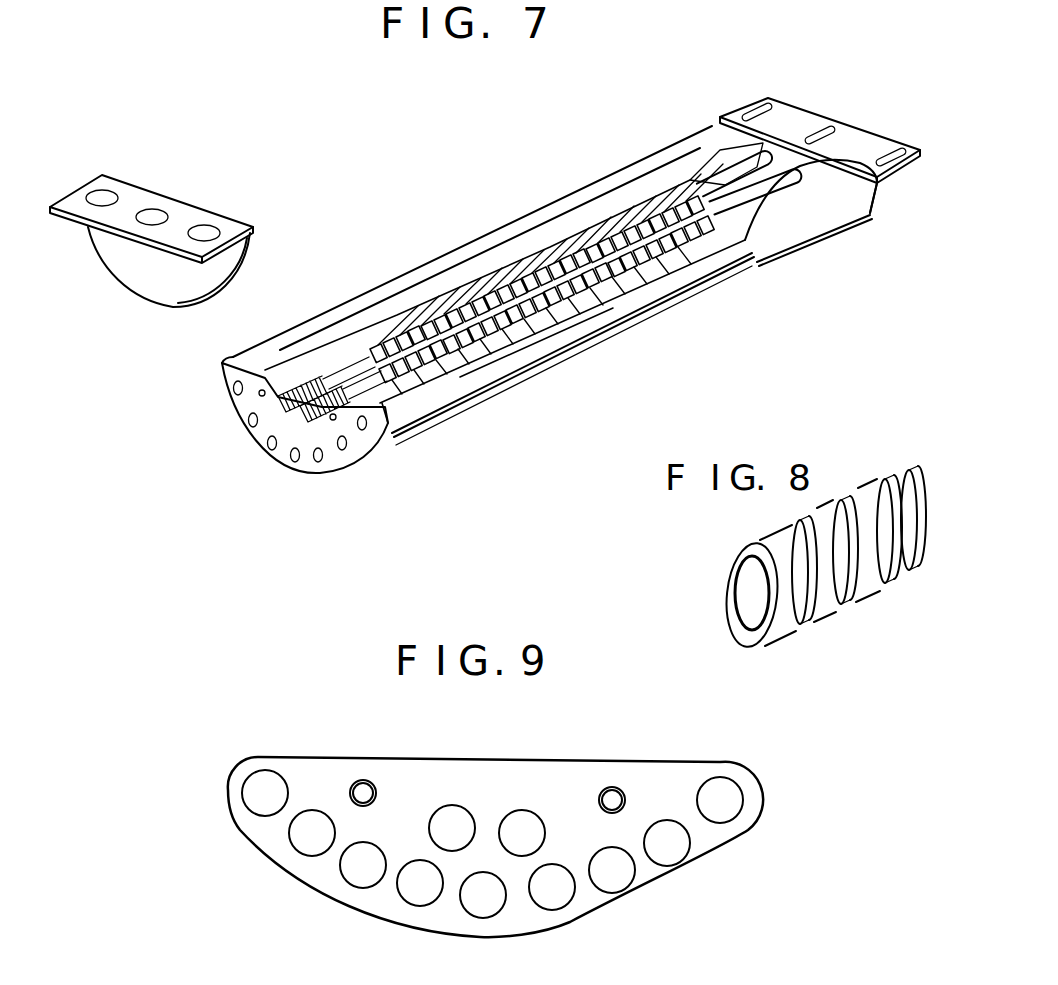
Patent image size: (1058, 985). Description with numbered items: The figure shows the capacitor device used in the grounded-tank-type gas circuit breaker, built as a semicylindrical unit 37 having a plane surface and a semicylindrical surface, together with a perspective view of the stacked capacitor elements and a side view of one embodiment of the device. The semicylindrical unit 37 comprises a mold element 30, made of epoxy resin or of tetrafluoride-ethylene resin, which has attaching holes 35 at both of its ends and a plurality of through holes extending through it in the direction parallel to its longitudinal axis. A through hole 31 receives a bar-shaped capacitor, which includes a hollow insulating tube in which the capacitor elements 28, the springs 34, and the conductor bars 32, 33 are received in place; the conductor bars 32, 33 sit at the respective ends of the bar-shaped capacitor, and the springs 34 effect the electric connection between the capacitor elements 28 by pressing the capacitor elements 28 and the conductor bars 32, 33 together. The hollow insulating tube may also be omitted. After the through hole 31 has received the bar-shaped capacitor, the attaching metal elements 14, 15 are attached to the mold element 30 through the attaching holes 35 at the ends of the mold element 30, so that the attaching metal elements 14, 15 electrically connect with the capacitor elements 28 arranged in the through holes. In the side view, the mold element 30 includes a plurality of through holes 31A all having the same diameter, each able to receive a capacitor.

In FIG. 7, the attaching metal element 14 is at (812, 112).
In FIG. 7, the attaching metal element 15 is at (143, 193).
In FIG. 7, the capacitor elements 28 is at (484, 296).
In FIG. 8, the capacitor elements 28 is at (863, 600).
In FIG. 7, the mold element 30 is at (460, 403).
In FIG. 9, the mold element 30 is at (553, 760).
In FIG. 7, the through hole 31 is at (250, 427).
In FIG. 9, the through holes 31A is at (557, 910).
In FIG. 7, the conductor bar 32 is at (348, 367).
In FIG. 7, the conductor bar 33 is at (722, 182).
In FIG. 7, the springs 34 is at (297, 382).
In FIG. 7, the attaching holes 35 is at (334, 420).
In FIG. 9, the attaching holes 35 is at (366, 780).
In FIG. 7, the semicylindrical unit 37 is at (600, 347).